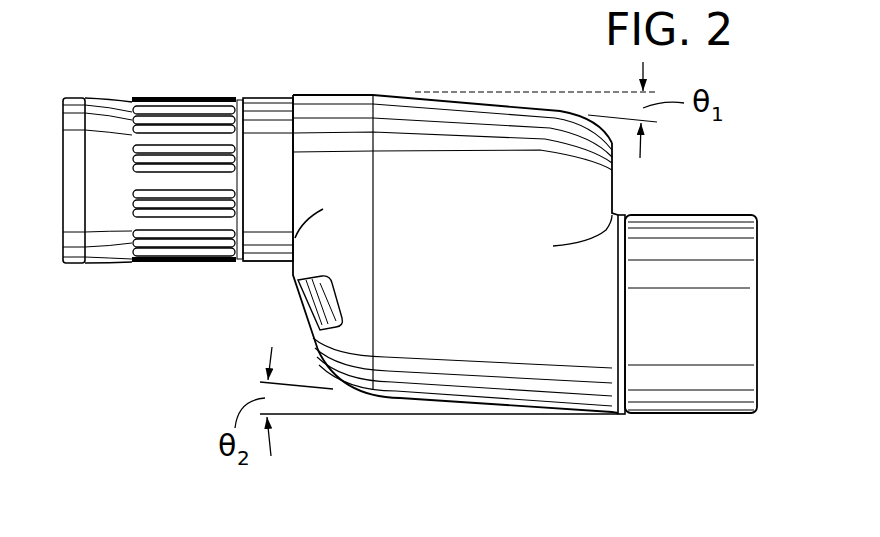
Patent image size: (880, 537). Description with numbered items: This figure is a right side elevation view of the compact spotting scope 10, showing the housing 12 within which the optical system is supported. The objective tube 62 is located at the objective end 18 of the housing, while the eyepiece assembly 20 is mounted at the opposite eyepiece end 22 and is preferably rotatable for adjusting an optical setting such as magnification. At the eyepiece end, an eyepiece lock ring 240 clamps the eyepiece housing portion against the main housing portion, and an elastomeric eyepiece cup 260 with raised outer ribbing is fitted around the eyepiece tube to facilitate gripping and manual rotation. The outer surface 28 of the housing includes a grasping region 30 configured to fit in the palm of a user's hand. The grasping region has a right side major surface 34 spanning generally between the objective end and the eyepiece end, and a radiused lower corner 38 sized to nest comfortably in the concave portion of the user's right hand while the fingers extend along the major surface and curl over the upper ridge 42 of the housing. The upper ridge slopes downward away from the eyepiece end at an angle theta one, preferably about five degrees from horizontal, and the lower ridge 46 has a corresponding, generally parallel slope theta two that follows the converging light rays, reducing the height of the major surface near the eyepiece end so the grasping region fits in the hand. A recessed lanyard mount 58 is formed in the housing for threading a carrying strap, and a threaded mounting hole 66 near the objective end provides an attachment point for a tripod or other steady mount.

The compact spotting scope 10 is at (210, 366).
The housing 12 is at (428, 99).
The objective end 18 is at (617, 428).
The eyepiece assembly 20 is at (146, 276).
The eyepiece end 22 is at (256, 272).
The outer surface 28 is at (543, 175).
The grasping region 30 is at (430, 292).
The right side major surface 34 is at (468, 291).
The radiused lower corner 38 is at (328, 387).
The upper ridge 42 is at (476, 98).
The lower ridge 46 is at (418, 402).
The lanyard mount 58 is at (310, 306).
The objective tube 62 is at (723, 398).
The threaded mounting hole 66 is at (628, 173).
The eyepiece lock ring 240 is at (268, 110).
The eyepiece cup 260 is at (78, 97).